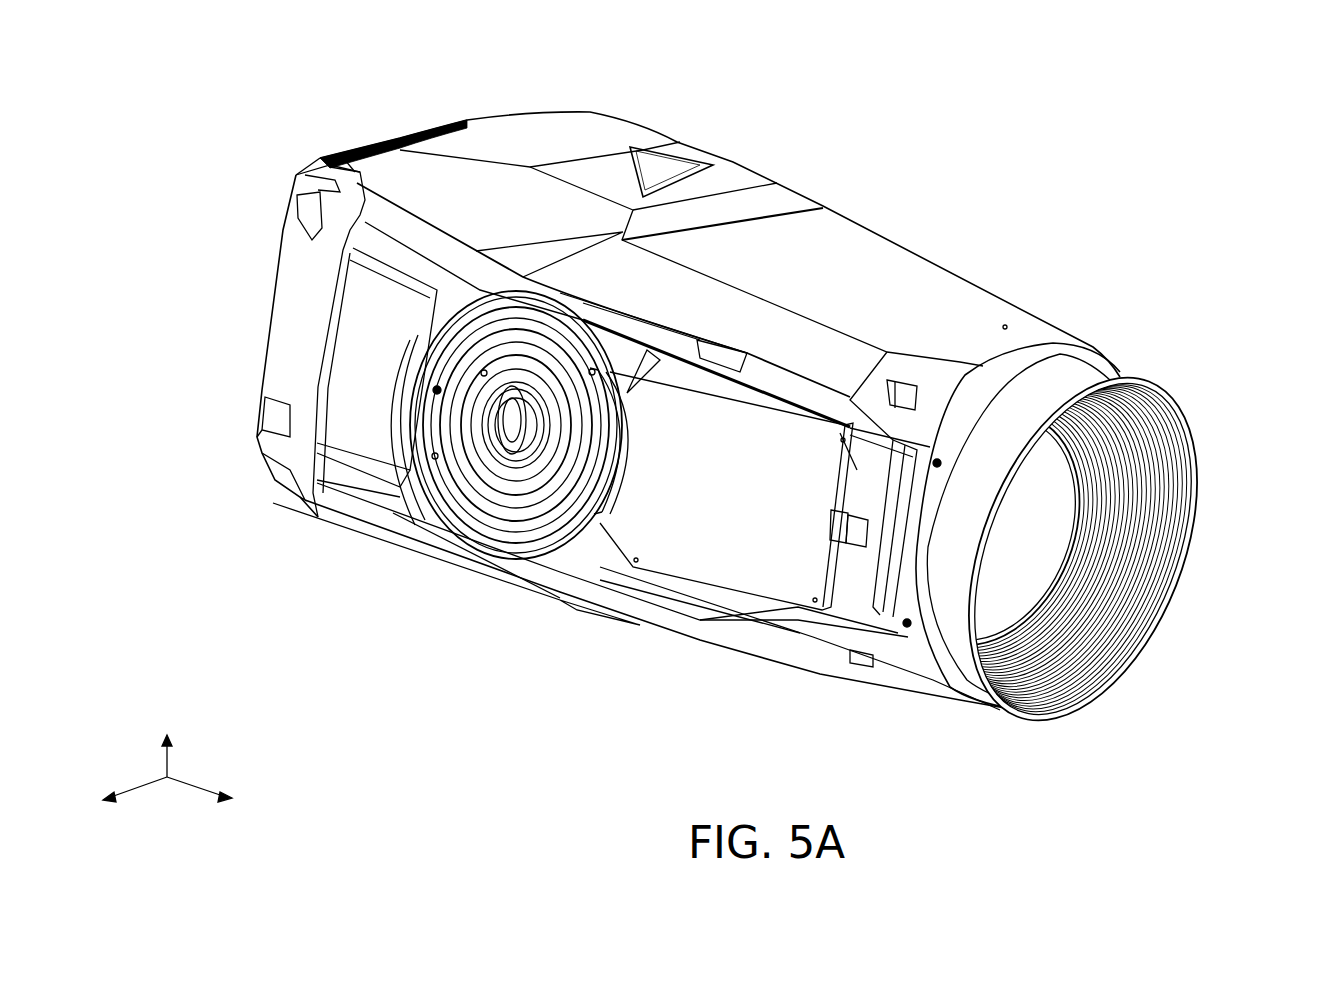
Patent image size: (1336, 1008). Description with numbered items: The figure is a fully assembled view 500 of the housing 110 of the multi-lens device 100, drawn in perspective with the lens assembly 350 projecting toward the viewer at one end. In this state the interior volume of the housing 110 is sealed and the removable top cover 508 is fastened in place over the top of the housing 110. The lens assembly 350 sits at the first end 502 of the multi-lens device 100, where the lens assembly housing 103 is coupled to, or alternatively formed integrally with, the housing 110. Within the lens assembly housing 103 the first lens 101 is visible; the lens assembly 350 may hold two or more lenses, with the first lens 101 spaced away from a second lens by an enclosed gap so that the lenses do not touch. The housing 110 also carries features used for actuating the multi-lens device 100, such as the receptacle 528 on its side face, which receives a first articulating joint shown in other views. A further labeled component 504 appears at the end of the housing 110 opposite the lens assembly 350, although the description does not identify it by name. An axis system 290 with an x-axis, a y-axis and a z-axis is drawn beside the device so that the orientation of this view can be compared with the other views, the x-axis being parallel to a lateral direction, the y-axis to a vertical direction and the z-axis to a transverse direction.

The fully assembled view 500 is at (954, 95).
The multi-lens device 100 is at (336, 155).
The housing 110 is at (733, 168).
The frame bracket 504 is at (260, 218).
The removable top cover 508 is at (811, 281).
The receptacle 528 is at (440, 383).
The first end 502 is at (1238, 435).
The lens assembly 350 is at (1034, 499).
The first lens 101 is at (1037, 533).
The lens assembly housing 103 is at (1040, 598).
The axis system 290 is at (214, 747).